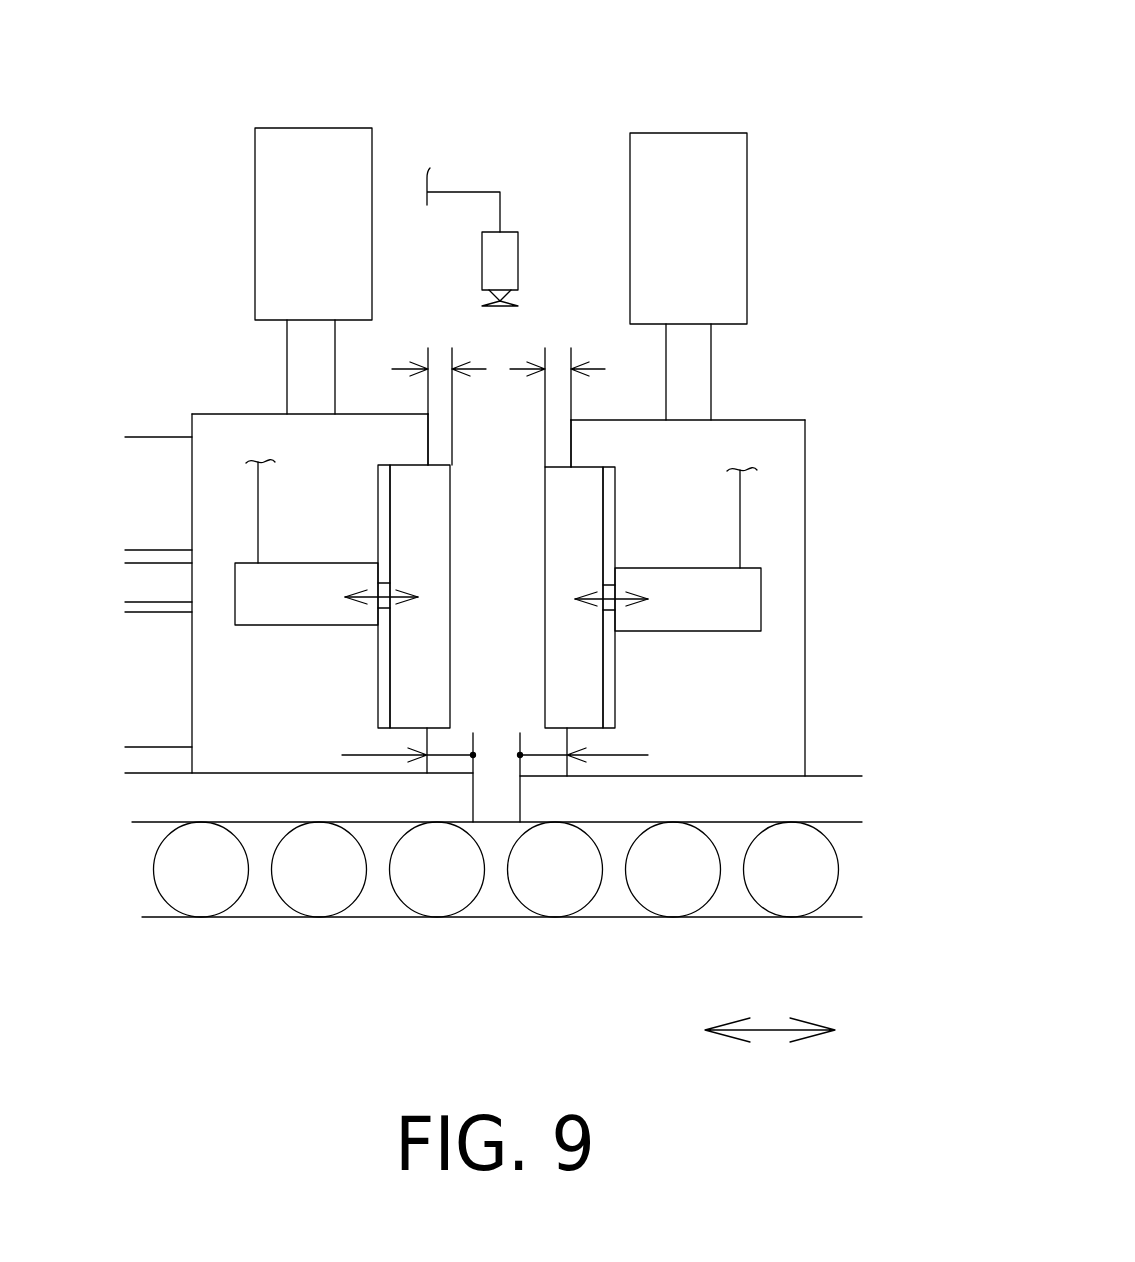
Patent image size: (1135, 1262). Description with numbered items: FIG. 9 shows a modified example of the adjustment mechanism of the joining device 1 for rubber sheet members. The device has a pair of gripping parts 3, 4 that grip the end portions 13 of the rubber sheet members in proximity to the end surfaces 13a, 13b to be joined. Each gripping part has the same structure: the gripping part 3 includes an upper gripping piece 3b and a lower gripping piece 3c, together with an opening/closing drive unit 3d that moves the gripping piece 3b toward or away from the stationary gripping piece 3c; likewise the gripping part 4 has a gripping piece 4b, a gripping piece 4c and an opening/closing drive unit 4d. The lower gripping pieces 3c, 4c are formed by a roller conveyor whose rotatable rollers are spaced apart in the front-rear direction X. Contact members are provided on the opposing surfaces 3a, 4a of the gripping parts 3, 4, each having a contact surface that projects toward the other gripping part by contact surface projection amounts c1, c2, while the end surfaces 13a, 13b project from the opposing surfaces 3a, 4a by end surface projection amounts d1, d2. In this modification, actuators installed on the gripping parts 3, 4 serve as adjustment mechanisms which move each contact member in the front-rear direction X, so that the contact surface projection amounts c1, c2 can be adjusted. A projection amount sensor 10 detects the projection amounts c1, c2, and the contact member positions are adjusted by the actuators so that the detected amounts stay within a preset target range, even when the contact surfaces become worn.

The joining device 1 is at (788, 158).
The gripping part 3 is at (235, 414).
The opposing surface 3a is at (433, 457).
The gripping piece 3b is at (192, 476).
The gripping piece 3c is at (335, 885).
The opening/closing drive unit 3d is at (258, 238).
The gripping part 4 is at (762, 420).
The opposing surface 4a is at (566, 457).
The gripping piece 4b is at (805, 480).
The gripping piece 4c is at (655, 890).
The opening/closing drive unit 4d is at (742, 243).
The projection amount sensor 10 is at (510, 262).
The end portion 13 is at (298, 787).
The end surface 13a is at (475, 800).
The end surface 13b is at (518, 800).
The contact surface projection amount c1 is at (439, 391).
The contact surface projection amount c2 is at (557, 392).
The end surface projection amount d1 is at (403, 741).
The end face projection amount d2 is at (591, 742).
The front-rear direction X is at (770, 1014).